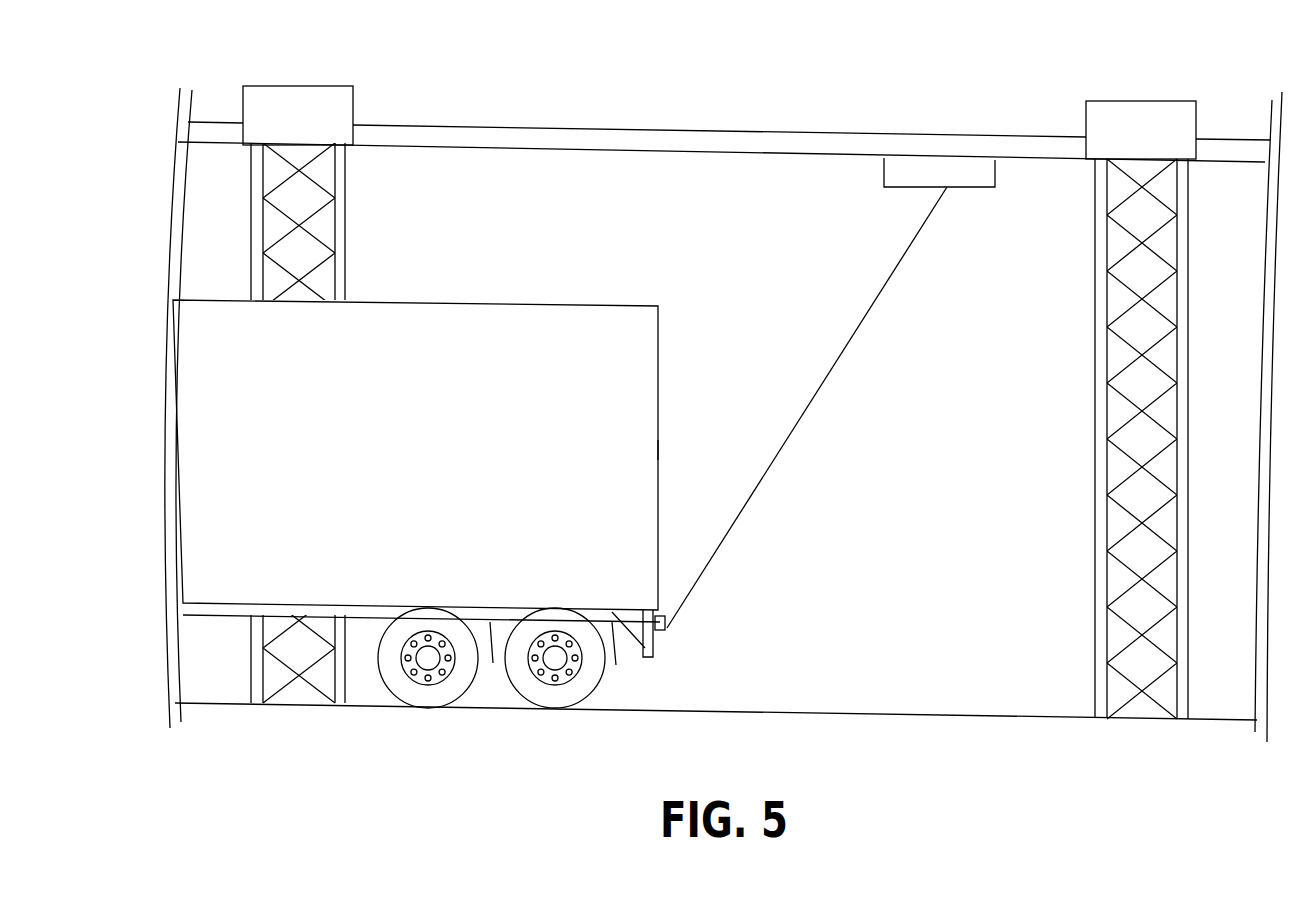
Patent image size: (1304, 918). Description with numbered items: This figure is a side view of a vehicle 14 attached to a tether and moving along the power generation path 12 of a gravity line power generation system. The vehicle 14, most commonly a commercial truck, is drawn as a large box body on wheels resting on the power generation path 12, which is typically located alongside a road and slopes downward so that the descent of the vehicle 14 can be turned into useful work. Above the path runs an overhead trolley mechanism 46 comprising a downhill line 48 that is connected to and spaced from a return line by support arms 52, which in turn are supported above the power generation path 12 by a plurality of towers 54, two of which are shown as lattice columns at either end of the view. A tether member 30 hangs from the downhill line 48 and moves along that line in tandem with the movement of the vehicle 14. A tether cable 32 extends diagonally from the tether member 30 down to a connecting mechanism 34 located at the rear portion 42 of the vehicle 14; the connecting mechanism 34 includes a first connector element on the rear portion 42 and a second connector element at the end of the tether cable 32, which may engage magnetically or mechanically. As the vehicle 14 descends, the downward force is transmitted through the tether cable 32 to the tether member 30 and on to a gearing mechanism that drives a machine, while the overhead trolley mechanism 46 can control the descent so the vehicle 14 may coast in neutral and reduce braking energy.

The power generation path 12 is at (826, 704).
The vehicle 14 is at (504, 325).
The tether member 30 is at (886, 178).
The tether cable 32 is at (842, 358).
The connecting mechanism 34 is at (684, 630).
The rear portion of the vehicle 42 is at (668, 443).
The overhead trolley mechanism 46 is at (592, 122).
The downhill line 48 is at (742, 140).
The support arm 52 is at (1148, 115).
The tower 54 is at (336, 213).